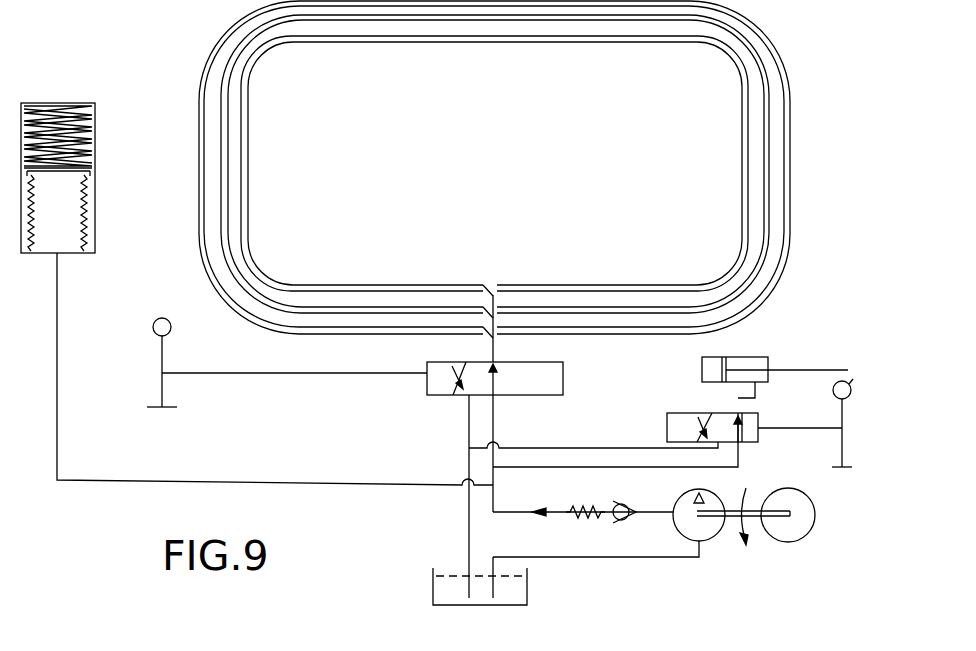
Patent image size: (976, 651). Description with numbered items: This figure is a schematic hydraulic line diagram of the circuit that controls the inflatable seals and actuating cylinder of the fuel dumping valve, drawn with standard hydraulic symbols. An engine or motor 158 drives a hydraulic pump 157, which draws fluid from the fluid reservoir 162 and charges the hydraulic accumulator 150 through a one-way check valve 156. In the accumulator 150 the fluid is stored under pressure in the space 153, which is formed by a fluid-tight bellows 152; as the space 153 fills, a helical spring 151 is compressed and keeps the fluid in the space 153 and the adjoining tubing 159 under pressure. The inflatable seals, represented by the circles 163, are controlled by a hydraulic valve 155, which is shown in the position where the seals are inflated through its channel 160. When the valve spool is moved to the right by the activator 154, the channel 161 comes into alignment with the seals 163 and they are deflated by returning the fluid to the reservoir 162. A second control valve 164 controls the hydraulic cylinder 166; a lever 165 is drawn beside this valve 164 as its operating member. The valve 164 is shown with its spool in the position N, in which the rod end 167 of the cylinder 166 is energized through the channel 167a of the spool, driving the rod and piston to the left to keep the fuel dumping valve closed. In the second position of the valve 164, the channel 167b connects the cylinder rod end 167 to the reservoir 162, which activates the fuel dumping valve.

The hydraulic accumulator 150 is at (96, 173).
The helical spring 151 is at (68, 115).
The fluid-tight bellows 152 is at (96, 202).
The space 153 is at (70, 211).
The activator 154 is at (163, 349).
The hydraulic valve 155 is at (545, 362).
The one-way check valve 156 is at (630, 506).
The hydraulic pump 157 is at (716, 537).
The motor 158 is at (803, 539).
The tubing 159 is at (495, 426).
The channel 160 is at (495, 381).
The channel 161 is at (455, 366).
The fluid reservoir 162 is at (58, 346).
The inflatable seals 163 is at (250, 173).
The second control valve 164 is at (760, 438).
The lever 165 is at (842, 403).
The hydraulic cylinder 166 is at (702, 372).
The rod end 167 is at (752, 357).
The channel 167a is at (742, 433).
The channel 167b is at (712, 416).